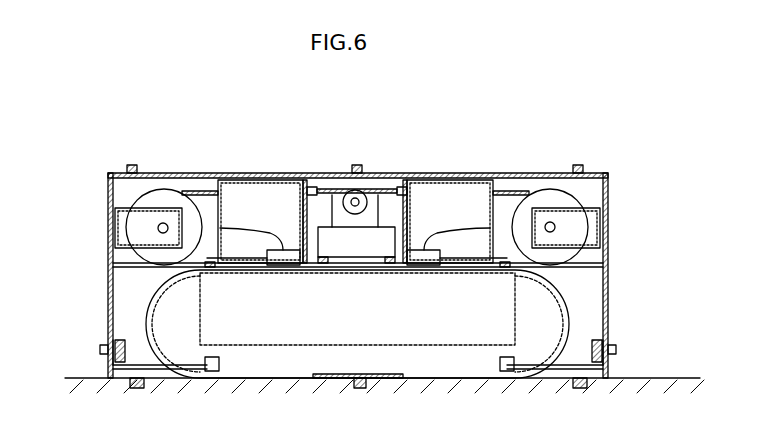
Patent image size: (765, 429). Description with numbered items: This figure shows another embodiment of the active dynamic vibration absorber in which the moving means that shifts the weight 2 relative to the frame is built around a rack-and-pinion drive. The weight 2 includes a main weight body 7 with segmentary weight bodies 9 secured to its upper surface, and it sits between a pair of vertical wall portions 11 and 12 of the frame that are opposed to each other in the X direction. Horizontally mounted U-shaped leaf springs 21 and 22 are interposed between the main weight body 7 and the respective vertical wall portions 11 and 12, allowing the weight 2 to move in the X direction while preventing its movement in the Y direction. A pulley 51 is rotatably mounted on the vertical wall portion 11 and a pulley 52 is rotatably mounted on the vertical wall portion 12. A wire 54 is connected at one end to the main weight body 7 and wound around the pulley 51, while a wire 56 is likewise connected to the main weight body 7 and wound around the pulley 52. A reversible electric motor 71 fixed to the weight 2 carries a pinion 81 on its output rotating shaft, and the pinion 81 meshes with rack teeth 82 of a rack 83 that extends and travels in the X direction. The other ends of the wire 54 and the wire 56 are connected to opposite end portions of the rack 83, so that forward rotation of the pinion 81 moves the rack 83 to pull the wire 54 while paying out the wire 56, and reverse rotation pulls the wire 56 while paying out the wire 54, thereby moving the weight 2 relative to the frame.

The weight 2 is at (277, 350).
The main weight body 7 is at (437, 335).
The segmentary weight bodies 9 is at (258, 188).
The vertical wall portion 11 is at (110, 277).
The vertical wall portion 12 is at (608, 228).
The U-shaped leaf spring 21 is at (148, 315).
The U-shaped leaf spring 22 is at (567, 318).
The pulley 51 is at (163, 205).
The pulley 52 is at (582, 257).
The wire 54 is at (203, 191).
The wire 56 is at (506, 191).
The reversible electric motor 71 is at (376, 189).
The pinion 81 is at (345, 188).
The rack teeth 82 is at (382, 195).
The rack 83 is at (353, 197).